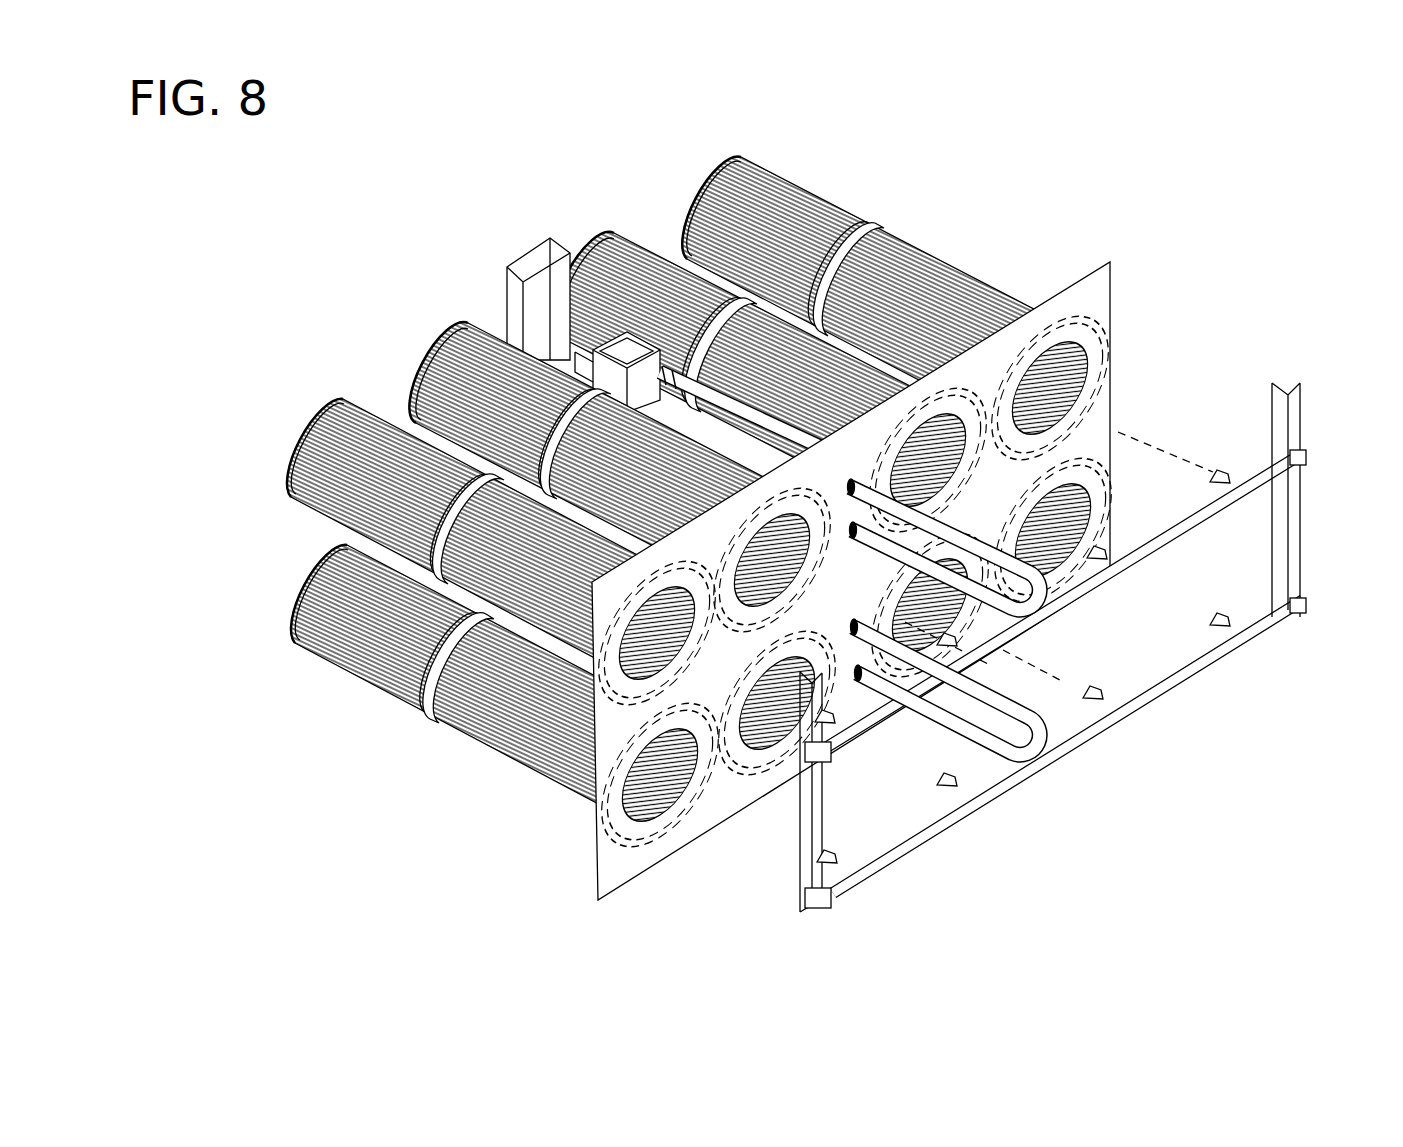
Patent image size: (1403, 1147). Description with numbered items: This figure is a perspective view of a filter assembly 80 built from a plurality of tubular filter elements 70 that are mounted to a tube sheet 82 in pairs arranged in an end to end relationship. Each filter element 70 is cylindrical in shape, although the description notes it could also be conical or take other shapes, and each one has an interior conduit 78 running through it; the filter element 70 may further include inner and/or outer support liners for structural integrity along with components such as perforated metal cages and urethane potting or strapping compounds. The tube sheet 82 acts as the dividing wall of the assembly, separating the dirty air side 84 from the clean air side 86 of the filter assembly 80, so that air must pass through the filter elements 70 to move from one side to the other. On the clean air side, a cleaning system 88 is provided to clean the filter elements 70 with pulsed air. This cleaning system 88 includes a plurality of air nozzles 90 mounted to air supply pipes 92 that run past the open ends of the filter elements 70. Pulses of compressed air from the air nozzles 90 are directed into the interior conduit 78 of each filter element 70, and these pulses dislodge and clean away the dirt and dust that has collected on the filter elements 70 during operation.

The filter element 70 is at (821, 178).
The interior conduit 78 is at (1078, 378).
The filter assembly 80 is at (1178, 185).
The tube sheet 82 is at (915, 577).
The dirty air side 84 is at (1002, 250).
The clean air side 86 is at (1172, 505).
The cleaning system 88 is at (1066, 783).
The air nozzles 90 is at (1224, 470).
The air supply pipes 92 is at (1195, 672).